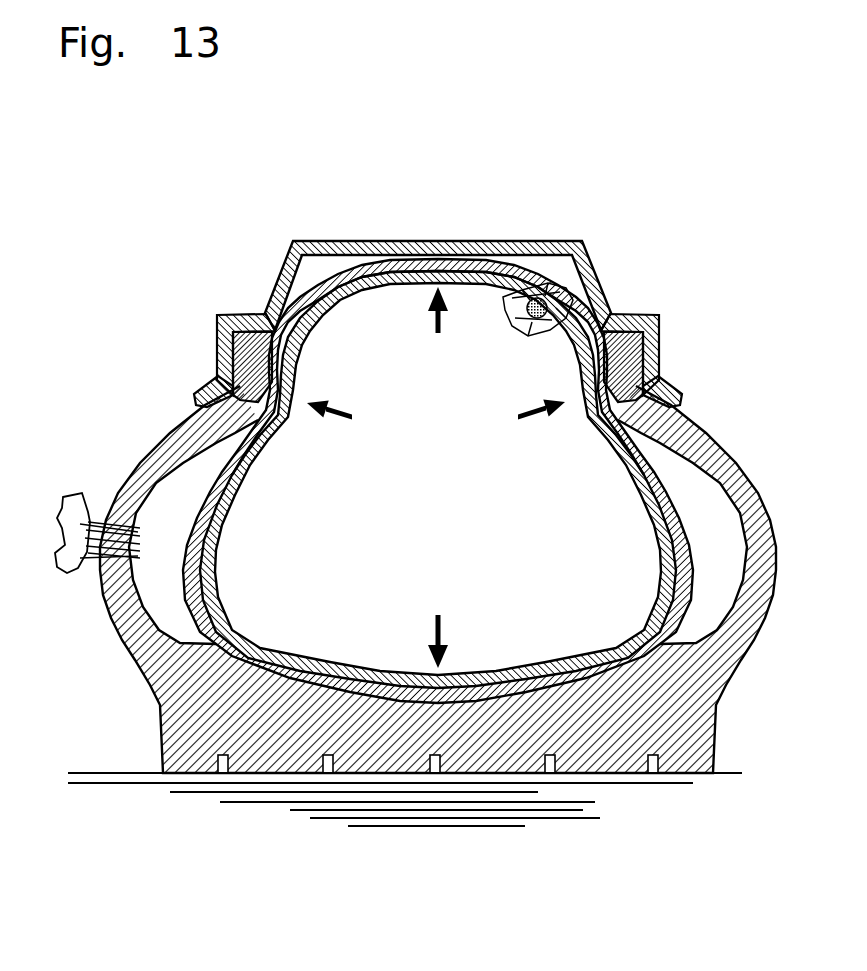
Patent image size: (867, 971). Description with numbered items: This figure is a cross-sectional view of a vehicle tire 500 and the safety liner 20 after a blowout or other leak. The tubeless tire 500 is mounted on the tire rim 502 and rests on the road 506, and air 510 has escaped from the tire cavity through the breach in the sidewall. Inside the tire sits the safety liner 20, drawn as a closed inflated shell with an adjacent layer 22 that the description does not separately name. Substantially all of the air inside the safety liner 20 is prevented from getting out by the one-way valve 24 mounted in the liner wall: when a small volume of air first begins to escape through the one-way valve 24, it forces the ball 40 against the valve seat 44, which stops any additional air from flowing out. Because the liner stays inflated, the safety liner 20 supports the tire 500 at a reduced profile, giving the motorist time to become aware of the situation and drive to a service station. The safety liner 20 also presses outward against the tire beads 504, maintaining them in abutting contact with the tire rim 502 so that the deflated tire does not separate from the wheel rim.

The safety liner 20 is at (276, 623).
The outer shell layer 22 is at (692, 546).
The one-way valve 24 is at (541, 326).
The ball 40 is at (449, 250).
The valve seat 44 is at (445, 334).
The vehicle tire 500 is at (738, 450).
The tire rim 502 is at (502, 241).
The tire beads 504 is at (212, 380).
The road 506 is at (600, 790).
The air 510 is at (72, 507).